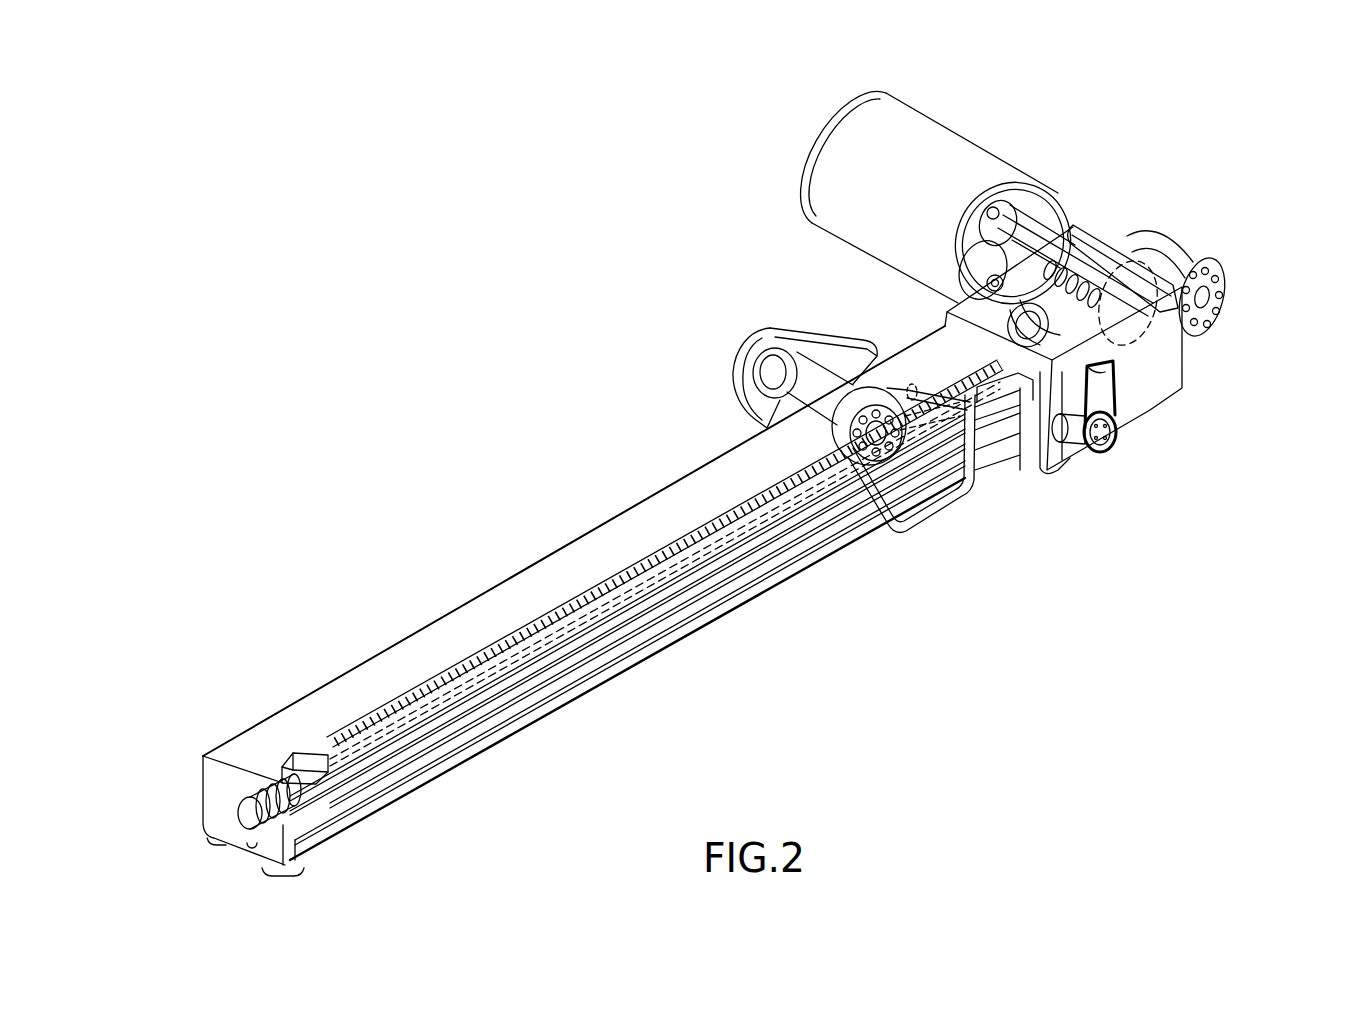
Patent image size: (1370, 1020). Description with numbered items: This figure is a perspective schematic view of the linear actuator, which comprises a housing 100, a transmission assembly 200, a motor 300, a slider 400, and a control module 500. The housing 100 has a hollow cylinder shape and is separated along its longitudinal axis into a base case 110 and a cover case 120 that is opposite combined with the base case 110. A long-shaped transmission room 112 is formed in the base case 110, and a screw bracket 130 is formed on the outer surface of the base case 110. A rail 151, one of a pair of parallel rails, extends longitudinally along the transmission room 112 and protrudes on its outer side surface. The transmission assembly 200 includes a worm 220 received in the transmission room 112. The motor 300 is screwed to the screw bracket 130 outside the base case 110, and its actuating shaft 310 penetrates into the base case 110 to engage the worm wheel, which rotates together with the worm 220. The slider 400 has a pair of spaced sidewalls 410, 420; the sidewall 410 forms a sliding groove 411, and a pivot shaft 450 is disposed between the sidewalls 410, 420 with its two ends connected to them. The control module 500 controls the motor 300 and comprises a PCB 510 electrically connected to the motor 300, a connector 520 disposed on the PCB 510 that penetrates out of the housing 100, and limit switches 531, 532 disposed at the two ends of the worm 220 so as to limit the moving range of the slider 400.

The housing 100 is at (767, 551).
The base case 110 is at (1190, 352).
The transmission room 112 is at (425, 645).
The cover case 120 is at (1152, 412).
The screw bracket 130 is at (985, 154).
The rail 151 is at (608, 641).
The transmission assembly 200 is at (665, 563).
The worm 220 is at (515, 636).
The motor 300 is at (977, 221).
The actuating shaft 310 is at (1105, 237).
The slider 400 is at (812, 426).
The sidewall 410 is at (901, 378).
The sliding groove 411 is at (858, 507).
The sidewall 420 is at (820, 346).
The pivot shaft 450 is at (780, 375).
The control module 500 is at (257, 747).
The PCB 510 is at (1073, 457).
The connector 520 is at (1120, 448).
The limit switch 531 is at (306, 752).
The limit switch 532 is at (907, 386).